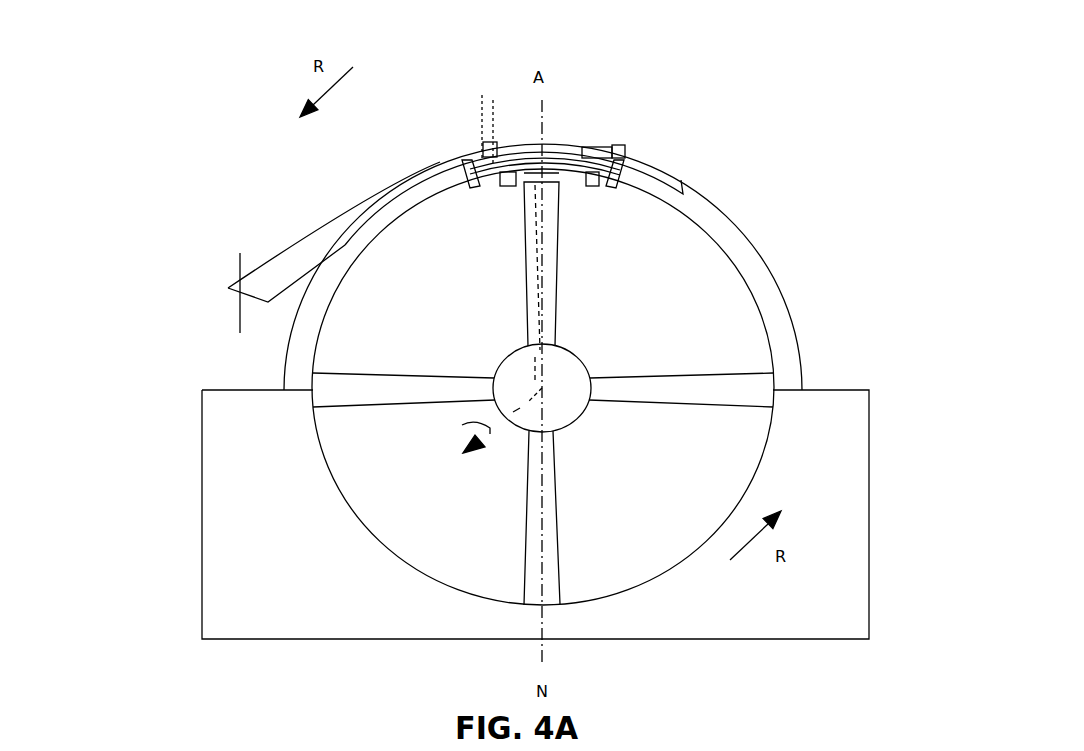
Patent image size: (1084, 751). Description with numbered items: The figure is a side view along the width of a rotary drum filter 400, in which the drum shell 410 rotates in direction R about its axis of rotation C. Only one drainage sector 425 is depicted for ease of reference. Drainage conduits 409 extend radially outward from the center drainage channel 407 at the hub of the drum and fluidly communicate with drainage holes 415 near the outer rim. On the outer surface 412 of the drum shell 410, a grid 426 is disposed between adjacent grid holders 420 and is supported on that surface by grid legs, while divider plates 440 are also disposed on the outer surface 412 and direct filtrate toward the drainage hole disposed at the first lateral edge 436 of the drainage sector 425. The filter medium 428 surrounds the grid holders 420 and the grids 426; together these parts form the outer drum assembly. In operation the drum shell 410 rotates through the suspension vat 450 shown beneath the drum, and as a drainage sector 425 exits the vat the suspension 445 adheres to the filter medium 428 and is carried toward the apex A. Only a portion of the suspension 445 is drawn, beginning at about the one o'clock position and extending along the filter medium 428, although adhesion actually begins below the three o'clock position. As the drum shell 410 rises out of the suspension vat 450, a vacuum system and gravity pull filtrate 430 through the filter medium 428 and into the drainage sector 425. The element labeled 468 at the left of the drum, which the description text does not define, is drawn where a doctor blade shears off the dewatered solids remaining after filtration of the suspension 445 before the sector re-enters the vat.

The rotary drum filter 400 is at (131, 282).
The center drainage channel 407 is at (579, 409).
The drainage conduits 409 is at (557, 281).
The drum shell 410 is at (848, 287).
The outer surface 412 is at (725, 262).
The drainage holes 415 is at (492, 180).
The grid holders 420 is at (459, 168).
The drainage sector 425 is at (565, 86).
The grid 426 is at (555, 158).
The filter medium 428 is at (688, 195).
The filtrate 430 is at (451, 435).
The first lateral edge 436 is at (607, 167).
The divider plates 440 is at (502, 178).
The suspension 445 is at (372, 196).
The suspension vat 450 is at (808, 488).
The discharge strip 468 is at (277, 300).